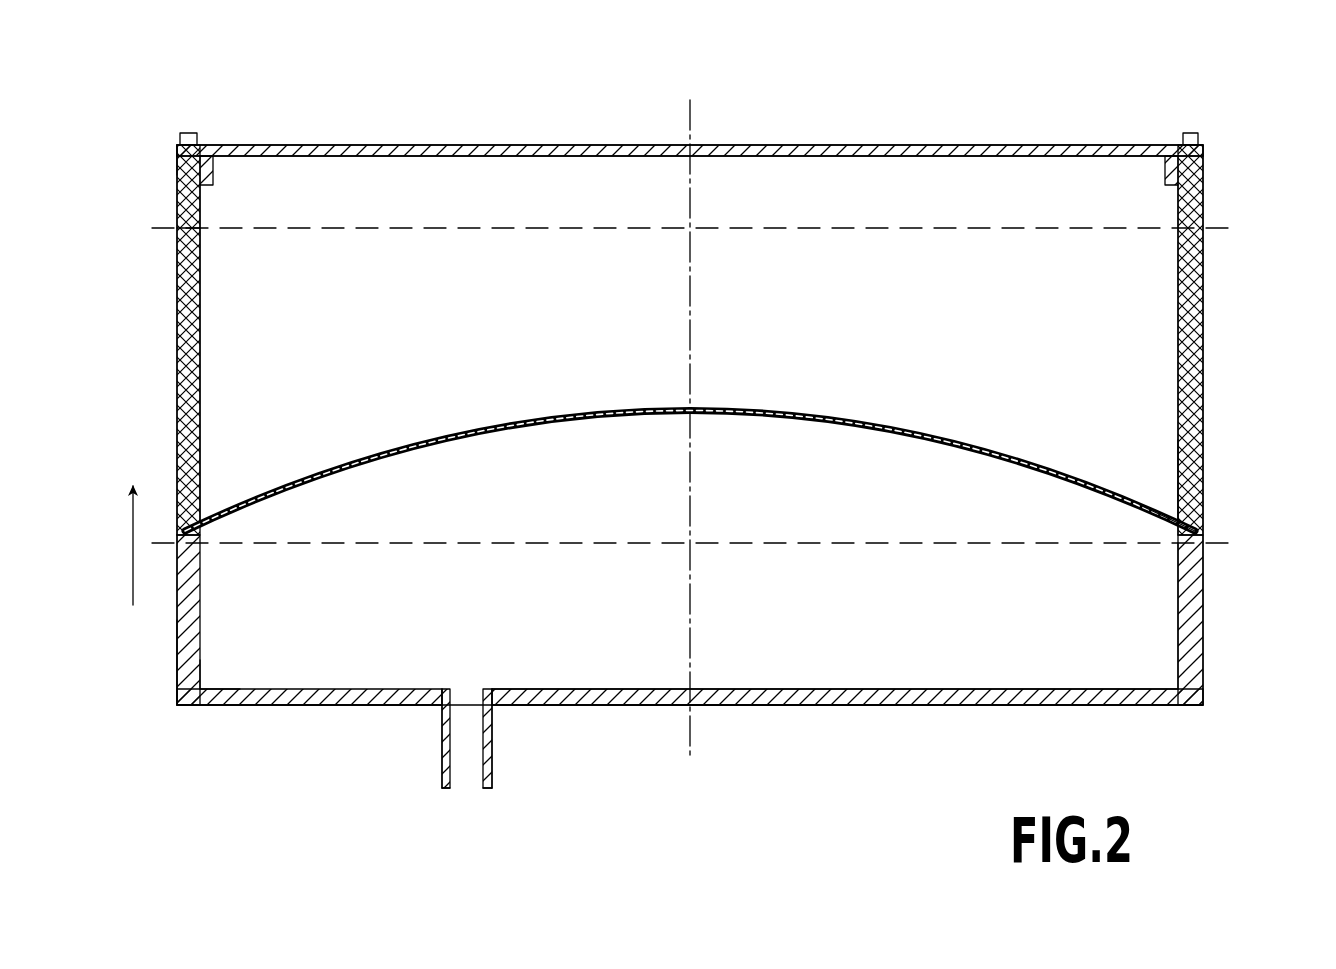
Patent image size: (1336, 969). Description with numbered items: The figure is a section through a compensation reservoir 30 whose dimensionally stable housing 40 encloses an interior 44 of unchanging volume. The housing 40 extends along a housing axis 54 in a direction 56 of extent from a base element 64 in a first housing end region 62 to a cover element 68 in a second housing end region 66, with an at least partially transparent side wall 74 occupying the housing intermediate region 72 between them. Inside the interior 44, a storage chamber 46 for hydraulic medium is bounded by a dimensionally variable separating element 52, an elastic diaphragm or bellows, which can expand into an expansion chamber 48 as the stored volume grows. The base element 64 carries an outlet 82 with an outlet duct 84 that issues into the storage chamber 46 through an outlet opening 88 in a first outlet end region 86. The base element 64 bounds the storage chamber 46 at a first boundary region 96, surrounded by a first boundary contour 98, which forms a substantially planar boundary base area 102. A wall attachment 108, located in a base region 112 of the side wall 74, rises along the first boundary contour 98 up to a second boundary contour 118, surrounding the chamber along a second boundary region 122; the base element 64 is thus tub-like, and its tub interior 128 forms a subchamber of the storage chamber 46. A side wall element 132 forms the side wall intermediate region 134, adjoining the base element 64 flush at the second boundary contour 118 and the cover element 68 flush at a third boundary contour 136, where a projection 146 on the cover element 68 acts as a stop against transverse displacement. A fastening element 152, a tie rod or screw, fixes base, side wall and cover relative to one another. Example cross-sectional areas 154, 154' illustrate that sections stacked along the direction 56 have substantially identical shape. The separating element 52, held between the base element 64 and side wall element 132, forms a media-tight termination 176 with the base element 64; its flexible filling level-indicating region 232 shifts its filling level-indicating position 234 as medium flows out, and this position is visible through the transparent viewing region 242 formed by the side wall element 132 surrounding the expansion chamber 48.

The third boundary contour 136 is at (177, 155).
The fastening element 152 is at (195, 140).
The projection 146 is at (215, 175).
The side wall 74 is at (177, 255).
The housing intermediate region 72 is at (165, 300).
The cross-sectional area 154' is at (690, 278).
The cross-sectional area 154 is at (690, 503).
The side wall intermediate region 134 is at (177, 325).
The side wall element 132 is at (177, 440).
The termination 176 is at (208, 500).
The second boundary contour 118 is at (205, 530).
The direction of extent 56 is at (133, 567).
The second boundary region 122 is at (205, 600).
The base region 112 is at (160, 628).
The first boundary contour 98 is at (205, 685).
The wall attachment 108 is at (177, 657).
The outlet opening 88 is at (455, 688).
The first outlet end region 86 is at (490, 675).
The outlet duct 84 is at (465, 778).
The outlet 82 is at (463, 790).
The housing axis 54 is at (700, 115).
The second housing end region 66 is at (778, 140).
The cover element 68 is at (865, 145).
The compensation reservoir 30 is at (975, 118).
The housing 40 is at (1090, 145).
The transparent viewing region 242 is at (1210, 200).
The interior 44 is at (1040, 355).
The filling level-indicating position 234 is at (853, 410).
The filling level-indicating region 232 is at (895, 425).
The separating element 52 is at (1025, 460).
The expansion chamber 48 is at (1135, 473).
The storage chamber 46 is at (1115, 598).
The first boundary region 96 is at (735, 685).
The boundary base area 102 is at (872, 688).
The tub interior 128 is at (1100, 645).
The base element 64 is at (888, 706).
The first housing end region 62 is at (797, 710).